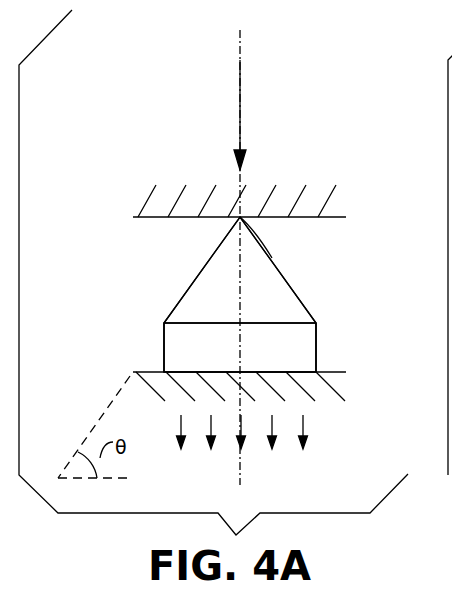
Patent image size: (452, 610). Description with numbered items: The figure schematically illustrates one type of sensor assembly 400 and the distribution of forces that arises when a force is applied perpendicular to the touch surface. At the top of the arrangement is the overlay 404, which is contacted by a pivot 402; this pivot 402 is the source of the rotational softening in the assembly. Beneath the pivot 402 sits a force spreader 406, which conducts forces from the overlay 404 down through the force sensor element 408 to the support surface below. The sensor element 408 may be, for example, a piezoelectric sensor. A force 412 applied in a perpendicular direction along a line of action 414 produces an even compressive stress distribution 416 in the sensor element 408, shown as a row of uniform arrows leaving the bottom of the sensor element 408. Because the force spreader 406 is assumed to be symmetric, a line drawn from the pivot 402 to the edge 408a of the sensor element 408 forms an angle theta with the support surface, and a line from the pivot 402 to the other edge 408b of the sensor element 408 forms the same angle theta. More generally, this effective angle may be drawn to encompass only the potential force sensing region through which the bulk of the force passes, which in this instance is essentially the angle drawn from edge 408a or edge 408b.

The sensor assembly 400 is at (113, 234).
The pivot 402 is at (272, 256).
The overlay 404 is at (334, 219).
The force spreader 406 is at (213, 252).
The force sensor element 408 is at (175, 345).
The edge of the sensor element 408a is at (163, 372).
The other edge of the sensor element 408b is at (318, 372).
The force 412 is at (241, 123).
The line of action 414 is at (241, 60).
The compressive stress distribution 416 is at (321, 410).